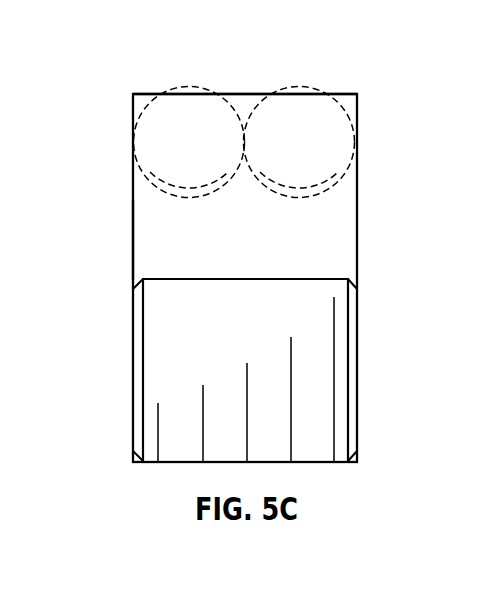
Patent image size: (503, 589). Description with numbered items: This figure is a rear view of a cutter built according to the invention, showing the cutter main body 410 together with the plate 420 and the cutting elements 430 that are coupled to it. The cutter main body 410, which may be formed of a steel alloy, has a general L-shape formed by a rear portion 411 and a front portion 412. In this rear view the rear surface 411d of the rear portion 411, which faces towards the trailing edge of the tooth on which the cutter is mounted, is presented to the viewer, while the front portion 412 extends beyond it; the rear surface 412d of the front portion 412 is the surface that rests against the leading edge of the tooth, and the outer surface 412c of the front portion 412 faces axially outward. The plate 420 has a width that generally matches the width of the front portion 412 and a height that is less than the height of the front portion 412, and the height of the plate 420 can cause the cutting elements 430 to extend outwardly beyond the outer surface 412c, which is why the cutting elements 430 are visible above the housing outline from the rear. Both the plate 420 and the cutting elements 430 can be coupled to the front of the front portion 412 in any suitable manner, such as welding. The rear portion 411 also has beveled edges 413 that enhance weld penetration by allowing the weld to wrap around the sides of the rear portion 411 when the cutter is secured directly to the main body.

The cutter main body 410 is at (123, 338).
The rear portion 411 is at (163, 382).
The rear surface 411d is at (310, 418).
The front portion 412 is at (133, 198).
The outer surface 412c is at (147, 93).
The rear surface 412d is at (148, 252).
The beveled edges 413 is at (353, 295).
The plate 420 is at (262, 199).
The cutting elements 430 is at (283, 120).